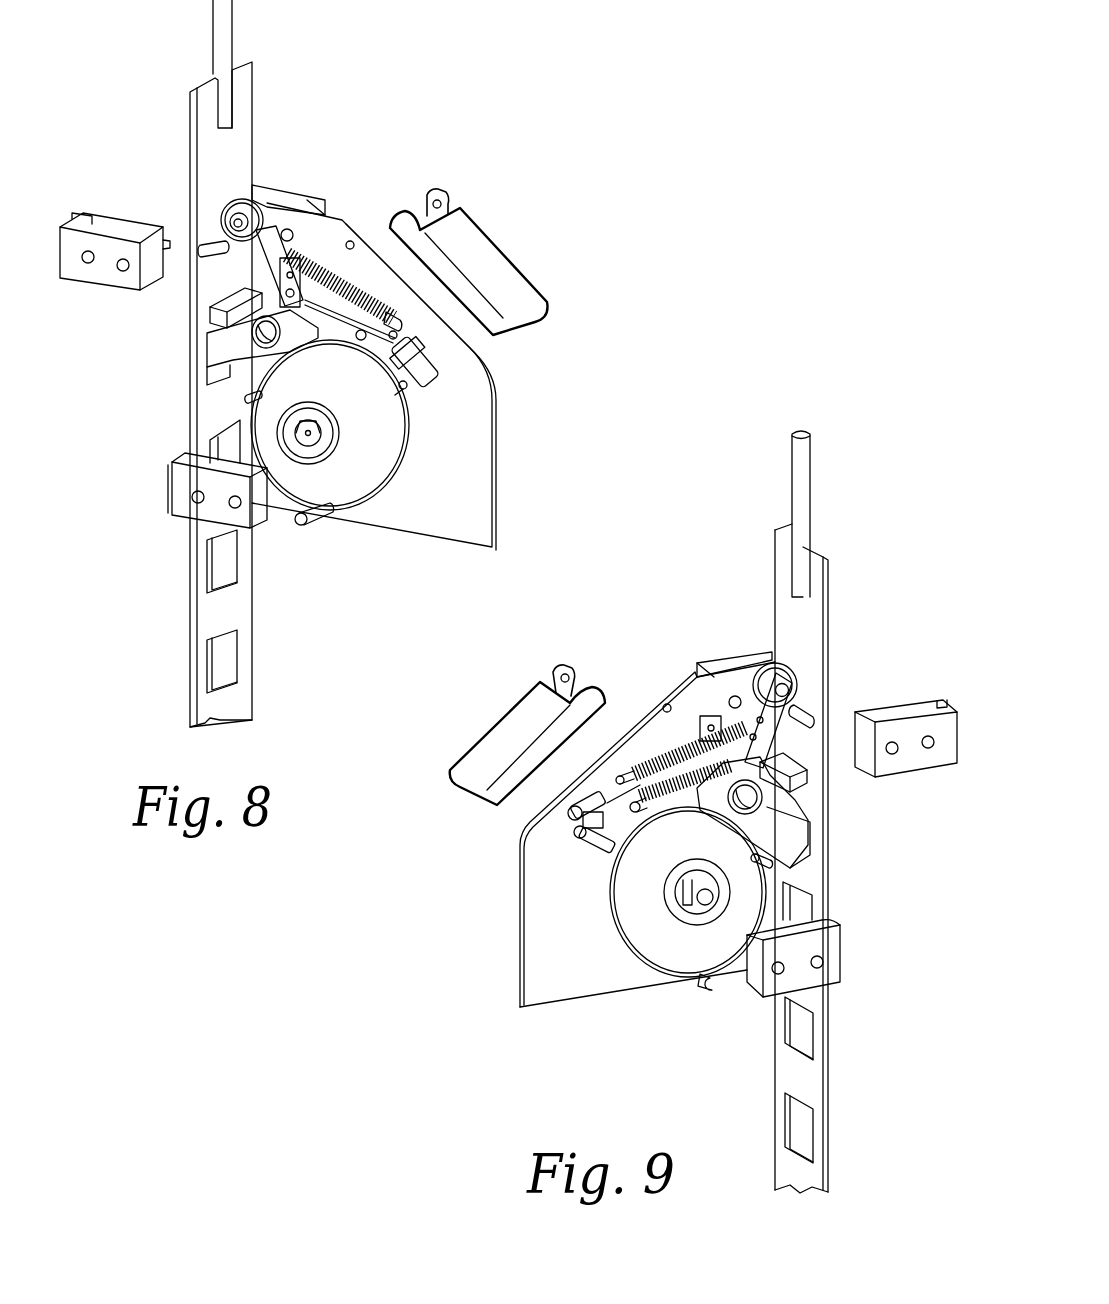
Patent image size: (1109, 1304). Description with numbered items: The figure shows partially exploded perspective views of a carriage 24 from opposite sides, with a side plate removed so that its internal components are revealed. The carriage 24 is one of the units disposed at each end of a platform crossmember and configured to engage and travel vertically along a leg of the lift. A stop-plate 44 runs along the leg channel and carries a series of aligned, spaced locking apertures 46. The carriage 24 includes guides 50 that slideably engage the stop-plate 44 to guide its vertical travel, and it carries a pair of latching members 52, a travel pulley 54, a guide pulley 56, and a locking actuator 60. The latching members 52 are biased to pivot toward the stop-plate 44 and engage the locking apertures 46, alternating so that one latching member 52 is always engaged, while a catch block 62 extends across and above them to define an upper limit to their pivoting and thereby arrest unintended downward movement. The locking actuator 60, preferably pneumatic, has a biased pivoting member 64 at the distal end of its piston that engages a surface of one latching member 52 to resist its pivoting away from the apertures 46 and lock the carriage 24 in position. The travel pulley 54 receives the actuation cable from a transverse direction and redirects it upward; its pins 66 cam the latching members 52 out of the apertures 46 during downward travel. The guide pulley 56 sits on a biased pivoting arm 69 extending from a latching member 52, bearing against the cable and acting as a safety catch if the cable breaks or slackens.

In FIG. 8, the carriage 24 is at (537, 420).
In FIG. 9, the carriage 24 is at (474, 927).
In FIG. 9, the stop-plate 44 is at (775, 538).
In FIG. 8, the locking apertures 46 is at (205, 665).
In FIG. 8, the guides 50 is at (78, 215).
In FIG. 9, the guides 50 is at (905, 700).
In FIG. 8, the latching members 52 is at (212, 357).
In FIG. 9, the latching members 52 is at (716, 808).
In FIG. 8, the travel pulley 54 is at (398, 490).
In FIG. 9, the travel pulley 54 is at (660, 970).
In FIG. 8, the guide pulley 56 is at (256, 202).
In FIG. 9, the guide pulley 56 is at (765, 658).
In FIG. 8, the locking actuator 60 is at (418, 380).
In FIG. 9, the locking actuator 60 is at (580, 842).
In FIG. 8, the catch block 62 is at (210, 312).
In FIG. 9, the catch block 62 is at (807, 780).
In FIG. 8, the biased pivoting member 64 is at (297, 253).
In FIG. 9, the biased pivoting member 64 is at (712, 718).
In FIG. 8, the pins 66 is at (250, 397).
In FIG. 9, the pins 66 is at (780, 867).
In FIG. 8, the pivoting arm 69 is at (227, 247).
In FIG. 9, the pivoting arm 69 is at (790, 707).